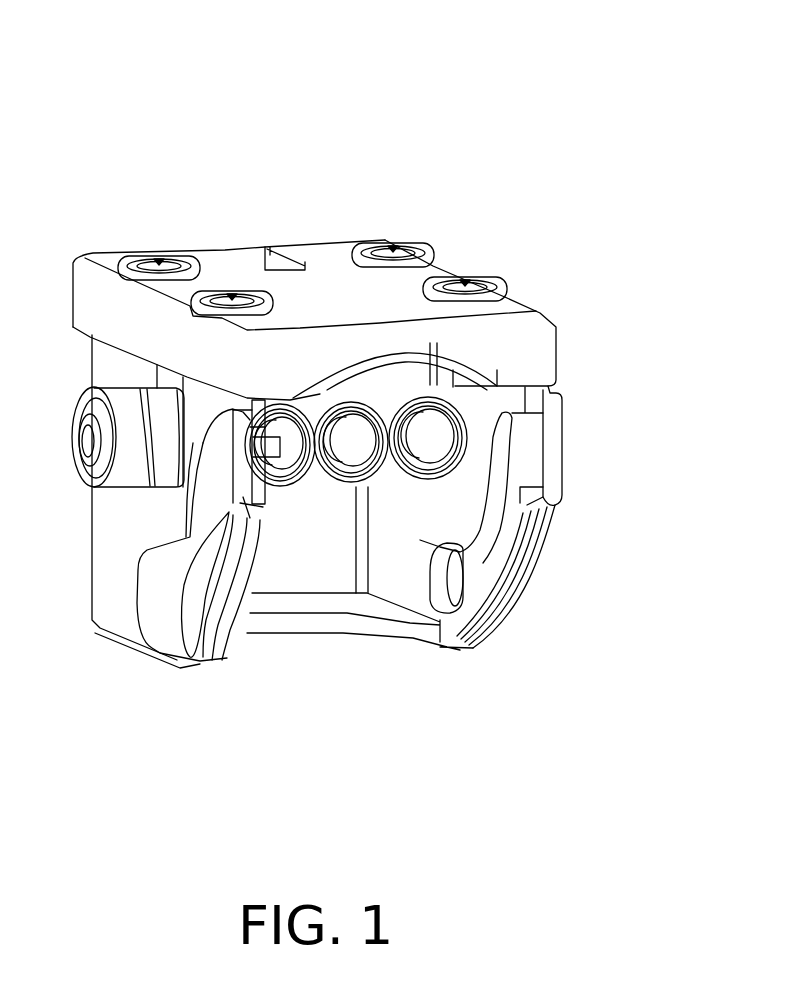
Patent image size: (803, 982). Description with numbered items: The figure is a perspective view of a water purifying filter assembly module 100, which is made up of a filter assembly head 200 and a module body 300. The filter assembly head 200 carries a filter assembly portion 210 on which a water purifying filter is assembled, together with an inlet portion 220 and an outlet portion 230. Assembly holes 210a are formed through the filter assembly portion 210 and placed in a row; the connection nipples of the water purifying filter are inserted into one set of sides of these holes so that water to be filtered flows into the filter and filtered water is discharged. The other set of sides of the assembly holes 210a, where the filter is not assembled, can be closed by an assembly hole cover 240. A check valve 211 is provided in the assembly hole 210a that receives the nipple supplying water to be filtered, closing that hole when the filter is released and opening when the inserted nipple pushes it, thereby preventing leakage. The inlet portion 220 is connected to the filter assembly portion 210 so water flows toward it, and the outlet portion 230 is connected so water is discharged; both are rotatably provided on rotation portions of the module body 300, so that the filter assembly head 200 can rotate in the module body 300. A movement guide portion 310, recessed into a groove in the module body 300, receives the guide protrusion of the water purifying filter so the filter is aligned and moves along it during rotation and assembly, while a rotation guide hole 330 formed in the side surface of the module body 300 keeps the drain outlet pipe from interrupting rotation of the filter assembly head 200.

The water purifying filter assembly module 100 is at (95, 41).
The filter assembly head 200 is at (317, 520).
The filter assembly portion 210 is at (355, 513).
The assembly holes 210a is at (420, 457).
The check valve 211 is at (253, 507).
The inlet portion 220 is at (128, 512).
The outlet portion 230 is at (565, 380).
The assembly hole cover 240 is at (366, 338).
The module body 300 is at (152, 220).
The movement guide portion 310 is at (487, 553).
The rotation guide hole 330 is at (282, 250).